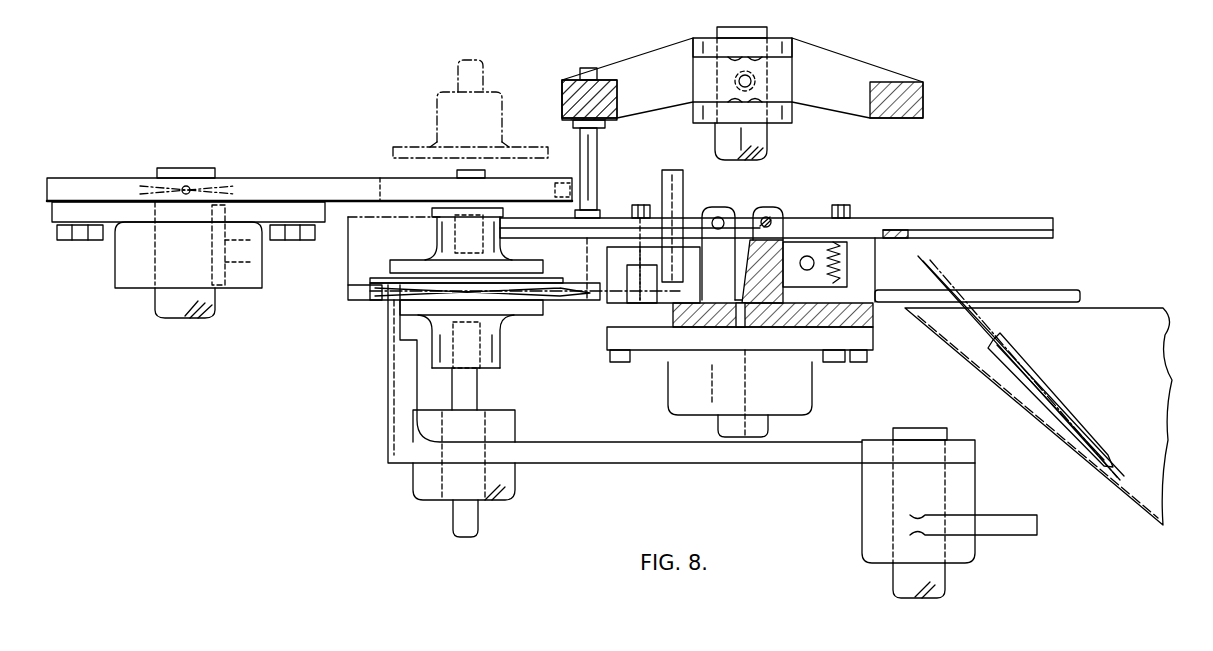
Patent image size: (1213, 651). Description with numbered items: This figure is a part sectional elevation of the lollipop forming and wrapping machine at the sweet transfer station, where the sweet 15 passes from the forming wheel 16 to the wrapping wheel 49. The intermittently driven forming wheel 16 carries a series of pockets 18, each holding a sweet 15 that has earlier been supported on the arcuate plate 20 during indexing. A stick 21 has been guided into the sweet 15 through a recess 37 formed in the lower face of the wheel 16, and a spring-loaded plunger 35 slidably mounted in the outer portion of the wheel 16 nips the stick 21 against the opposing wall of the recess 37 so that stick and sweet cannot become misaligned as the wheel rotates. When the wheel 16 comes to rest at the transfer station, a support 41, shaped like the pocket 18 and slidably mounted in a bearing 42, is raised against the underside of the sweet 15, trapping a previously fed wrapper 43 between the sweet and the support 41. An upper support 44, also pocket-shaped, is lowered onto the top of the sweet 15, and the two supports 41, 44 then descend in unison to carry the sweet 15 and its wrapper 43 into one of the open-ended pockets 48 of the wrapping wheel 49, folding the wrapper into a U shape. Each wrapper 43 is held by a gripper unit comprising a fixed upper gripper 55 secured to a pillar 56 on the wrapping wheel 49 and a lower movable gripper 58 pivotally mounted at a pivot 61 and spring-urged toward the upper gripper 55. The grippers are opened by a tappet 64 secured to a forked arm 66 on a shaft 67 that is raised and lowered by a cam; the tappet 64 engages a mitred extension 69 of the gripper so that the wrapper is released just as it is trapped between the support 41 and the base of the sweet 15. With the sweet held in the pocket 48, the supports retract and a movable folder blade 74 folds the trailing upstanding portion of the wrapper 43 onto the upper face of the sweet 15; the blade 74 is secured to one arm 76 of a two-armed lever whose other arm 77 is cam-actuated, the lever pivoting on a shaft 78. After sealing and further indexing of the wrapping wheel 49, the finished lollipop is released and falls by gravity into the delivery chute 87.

The sweet 15 is at (1060, 405).
The forming wheel 16 is at (273, 190).
The pocket 18 is at (420, 190).
The arcuate plate 20 is at (340, 208).
The stick 21 is at (937, 288).
The plunger 35 is at (560, 176).
The recess 37 is at (183, 186).
The support 41 is at (520, 318).
The bearing 42 is at (500, 482).
The wrapper 43 is at (355, 258).
The upper support 44 is at (420, 262).
The pocket 48 is at (1066, 292).
The wrapping wheel 49 is at (610, 335).
The upper gripper 55 is at (614, 216).
The pillar 56 is at (838, 246).
The lower movable gripper 58 is at (1033, 238).
The pivot 61 is at (766, 216).
The tappet 64 is at (598, 172).
The forked arm 66 is at (648, 62).
The shaft 67 is at (760, 138).
The mitred extension 69 is at (590, 232).
The folder blade 74 is at (535, 280).
The arm 76 is at (585, 455).
The arm 77 is at (1012, 522).
The shaft 78 is at (905, 585).
The delivery chute 87 is at (1110, 325).